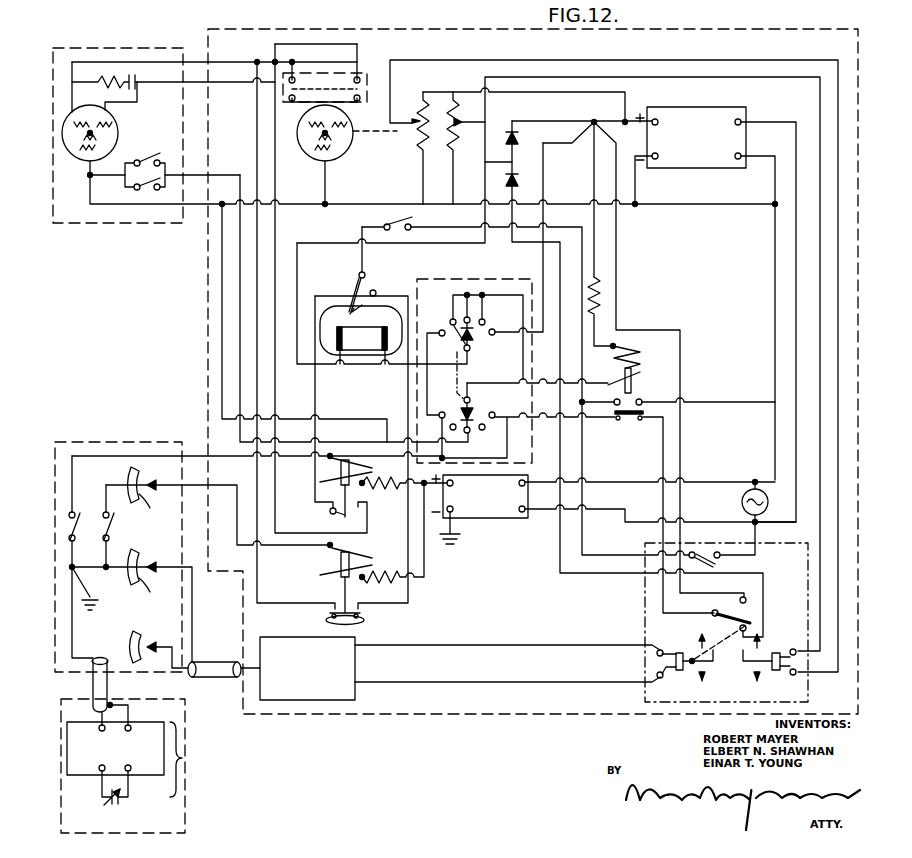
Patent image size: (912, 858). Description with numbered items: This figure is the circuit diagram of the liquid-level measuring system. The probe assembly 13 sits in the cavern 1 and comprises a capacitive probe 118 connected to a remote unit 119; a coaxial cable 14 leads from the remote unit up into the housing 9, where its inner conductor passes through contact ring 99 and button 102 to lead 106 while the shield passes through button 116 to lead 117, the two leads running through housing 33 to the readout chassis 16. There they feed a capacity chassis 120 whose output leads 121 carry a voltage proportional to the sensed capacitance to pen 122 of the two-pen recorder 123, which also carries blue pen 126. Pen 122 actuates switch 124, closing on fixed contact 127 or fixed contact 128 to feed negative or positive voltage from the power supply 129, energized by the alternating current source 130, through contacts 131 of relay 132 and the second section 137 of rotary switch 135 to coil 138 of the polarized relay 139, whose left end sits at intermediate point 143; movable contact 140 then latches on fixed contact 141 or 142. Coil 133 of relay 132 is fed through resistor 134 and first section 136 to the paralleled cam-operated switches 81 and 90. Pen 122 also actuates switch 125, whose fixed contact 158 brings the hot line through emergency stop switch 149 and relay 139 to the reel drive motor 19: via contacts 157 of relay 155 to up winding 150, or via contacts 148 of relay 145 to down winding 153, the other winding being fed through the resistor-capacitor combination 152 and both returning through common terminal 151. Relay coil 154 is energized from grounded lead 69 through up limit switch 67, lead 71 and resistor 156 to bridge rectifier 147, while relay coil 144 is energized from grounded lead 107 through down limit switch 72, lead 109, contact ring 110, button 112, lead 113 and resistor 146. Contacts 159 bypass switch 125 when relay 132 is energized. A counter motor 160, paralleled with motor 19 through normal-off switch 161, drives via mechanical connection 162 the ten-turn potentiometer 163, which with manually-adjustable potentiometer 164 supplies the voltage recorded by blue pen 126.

The cavern 1 is at (185, 742).
The housing 9 is at (110, 437).
The probe assembly 13 is at (146, 777).
The coaxial cable 14 is at (108, 691).
The readout chassis 16 is at (460, 716).
The reel drive motor 19 is at (66, 124).
The housing 33 is at (102, 48).
The up limit switch 67 is at (78, 540).
The grounded switch lead 69 is at (70, 567).
The switch lead 71 is at (76, 468).
The down limit switch 72 is at (110, 530).
The cam-operated switch 81 is at (151, 156).
The cam-operated switch 90 is at (134, 190).
The contact ring 99 is at (136, 634).
The button 102 is at (112, 656).
The lead 106 is at (152, 640).
The grounded switch lead 107 is at (106, 570).
The switch lead 109 is at (92, 504).
The contact ring 110 is at (136, 470).
The button 112 is at (157, 508).
The lead 113 is at (193, 477).
The button 116 is at (142, 556).
The lead 117 is at (159, 592).
The capacitive probe 118 is at (104, 798).
The remote unit 119 is at (136, 722).
The capacity chassis 120 is at (273, 637).
The output leads 121 is at (395, 684).
The pen 122 is at (692, 664).
The two-pen recorder 123 is at (645, 613).
The switch 124 is at (747, 622).
The switch 125 is at (689, 556).
The blue pen 126 is at (758, 645).
The fixed contact 127 is at (745, 628).
The fixed contact 128 is at (738, 610).
The unidirectional power supply 129 is at (690, 108).
The alternating current source 130 is at (741, 503).
The relay contacts 131 is at (640, 425).
The relay 132 is at (636, 360).
The relay coil 133 is at (634, 377).
The resistor 134 is at (612, 290).
The rotary switch 135 is at (490, 276).
The first switch section 136 is at (484, 418).
The second switch section 137 is at (440, 328).
The relay coil 138 is at (372, 352).
The bistable polarized relay 139 is at (392, 300).
The movable contact 140 is at (363, 315).
The fixed contact 141 is at (355, 290).
The fixed contact 142 is at (375, 290).
The intermediate point 143 is at (504, 146).
The relay coil 144 is at (362, 556).
The relay 145 is at (332, 576).
The resistor 146 is at (378, 582).
The bridge rectifier 147 is at (497, 520).
The relay contacts 148 is at (364, 612).
The emergency stop switch 149 is at (392, 219).
The up motor winding 150 is at (109, 124).
The common terminal 151 is at (120, 141).
The resistor-capacitor combination 152 is at (118, 70).
The down motor winding 153 is at (90, 165).
The relay coil 154 is at (362, 466).
The relay 155 is at (332, 480).
The resistor 156 is at (377, 490).
The relay contacts 157 is at (330, 515).
The fixed contact 158 is at (722, 556).
The relay contacts 159 is at (616, 399).
The counter motor 160 is at (307, 157).
The normal-off switch 161 is at (366, 70).
The mechanical connection 162 is at (378, 135).
The ten-turn potentiometer 163 is at (418, 115).
The manually-adjustable potentiometer 164 is at (458, 124).